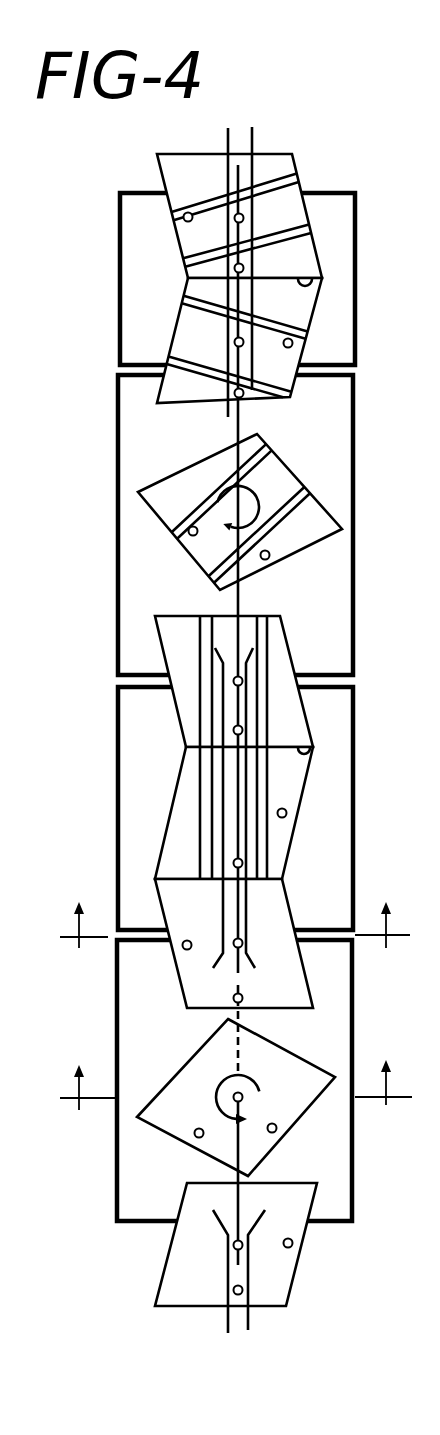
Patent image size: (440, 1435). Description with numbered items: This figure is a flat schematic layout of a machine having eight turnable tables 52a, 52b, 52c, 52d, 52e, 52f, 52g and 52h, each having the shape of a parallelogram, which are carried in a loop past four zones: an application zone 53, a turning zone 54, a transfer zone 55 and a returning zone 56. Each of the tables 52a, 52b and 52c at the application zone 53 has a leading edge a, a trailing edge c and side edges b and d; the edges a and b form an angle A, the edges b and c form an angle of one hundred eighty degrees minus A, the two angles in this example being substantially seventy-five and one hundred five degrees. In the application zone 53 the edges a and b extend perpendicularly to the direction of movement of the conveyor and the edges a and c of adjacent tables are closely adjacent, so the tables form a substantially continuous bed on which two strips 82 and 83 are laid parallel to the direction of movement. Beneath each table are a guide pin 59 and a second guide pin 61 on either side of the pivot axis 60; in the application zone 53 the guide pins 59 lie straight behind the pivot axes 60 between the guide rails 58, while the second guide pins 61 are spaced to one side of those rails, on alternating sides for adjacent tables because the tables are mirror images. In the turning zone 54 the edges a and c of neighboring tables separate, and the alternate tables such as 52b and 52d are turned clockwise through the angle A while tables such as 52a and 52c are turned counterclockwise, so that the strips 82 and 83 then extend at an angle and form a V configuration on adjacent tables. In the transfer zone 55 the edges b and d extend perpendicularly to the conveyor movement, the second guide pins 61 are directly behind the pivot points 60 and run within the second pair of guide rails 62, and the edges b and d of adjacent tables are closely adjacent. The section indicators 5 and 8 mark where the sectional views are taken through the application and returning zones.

The table 52a is at (182, 970).
The table 52b is at (167, 808).
The table 52c is at (157, 641).
The table 52d is at (157, 498).
The table 52e is at (160, 389).
The table 52f is at (174, 222).
The table 52g is at (162, 1282).
The table 52h is at (148, 1120).
The application zone 53 is at (102, 748).
The turning zone 54 is at (102, 553).
The transfer zone 55 is at (108, 308).
The returning zone 56 is at (108, 1046).
The guide rails 58 is at (226, 786).
The guide pin 59 is at (178, 540).
The pivot axis 60 is at (241, 218).
The second guide pin 61 is at (244, 266).
The guide rails 62 is at (257, 140).
The strip 82 is at (305, 230).
The strip 83 is at (287, 173).
The leading edge a is at (302, 208).
The side edge b is at (197, 153).
The trailing edge c is at (188, 252).
The side edge d is at (318, 283).
The section line 5- 5 is at (235, 932).
The section line 8- 8 is at (234, 1094).